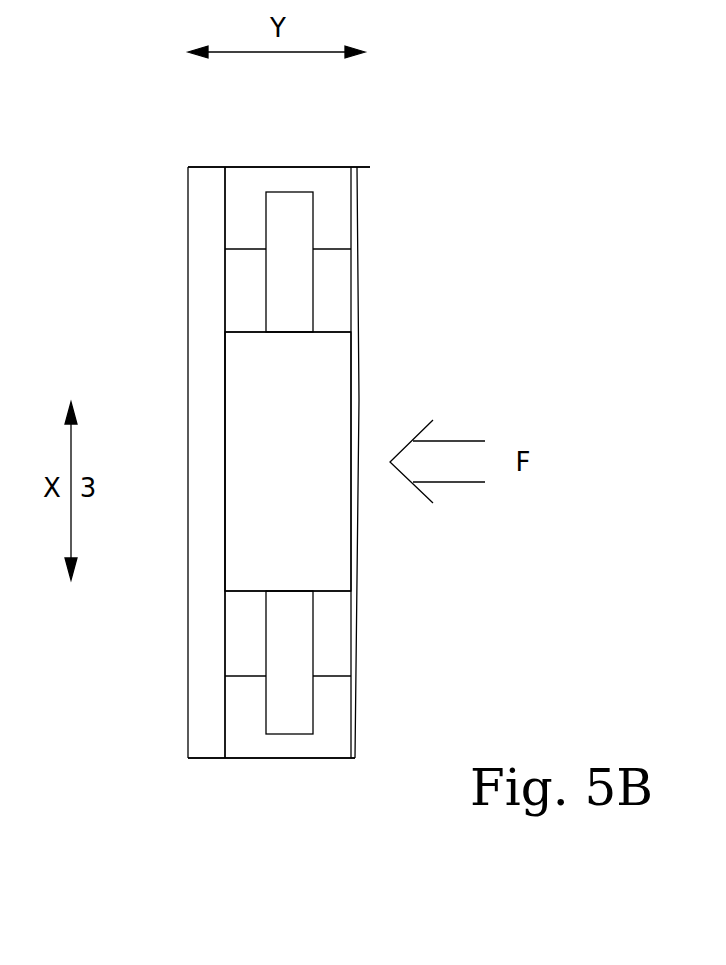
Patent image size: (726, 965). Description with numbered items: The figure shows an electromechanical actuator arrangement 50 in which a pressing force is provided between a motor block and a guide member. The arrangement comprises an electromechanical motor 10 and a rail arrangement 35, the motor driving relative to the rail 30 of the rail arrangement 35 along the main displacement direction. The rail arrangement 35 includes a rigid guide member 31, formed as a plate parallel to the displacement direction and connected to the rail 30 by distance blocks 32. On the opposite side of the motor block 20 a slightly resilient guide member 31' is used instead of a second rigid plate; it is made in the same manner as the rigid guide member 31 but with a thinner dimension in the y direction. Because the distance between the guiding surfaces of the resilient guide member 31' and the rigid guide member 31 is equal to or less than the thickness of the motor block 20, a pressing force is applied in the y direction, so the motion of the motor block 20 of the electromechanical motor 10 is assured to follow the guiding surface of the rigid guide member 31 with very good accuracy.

The electromechanical motor 10 is at (237, 570).
The motor block 20 is at (247, 479).
The rail 30 is at (285, 205).
The guide member 31 is at (171, 458).
The resilient guide member 31' is at (403, 462).
The distance block 32 is at (330, 177).
The rail arrangement 35 is at (210, 177).
The electromechanical actuator arrangement 50 is at (132, 338).